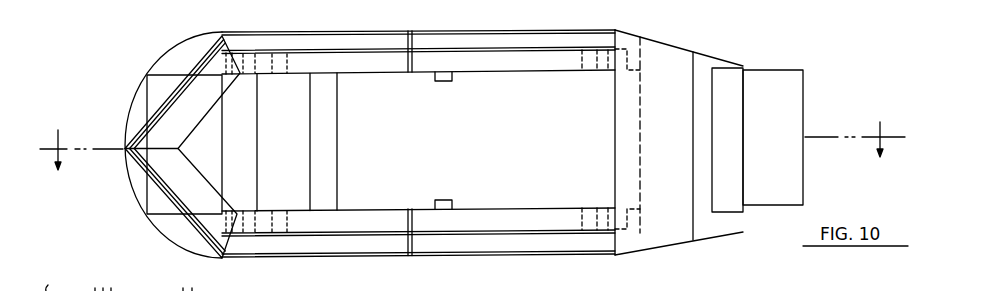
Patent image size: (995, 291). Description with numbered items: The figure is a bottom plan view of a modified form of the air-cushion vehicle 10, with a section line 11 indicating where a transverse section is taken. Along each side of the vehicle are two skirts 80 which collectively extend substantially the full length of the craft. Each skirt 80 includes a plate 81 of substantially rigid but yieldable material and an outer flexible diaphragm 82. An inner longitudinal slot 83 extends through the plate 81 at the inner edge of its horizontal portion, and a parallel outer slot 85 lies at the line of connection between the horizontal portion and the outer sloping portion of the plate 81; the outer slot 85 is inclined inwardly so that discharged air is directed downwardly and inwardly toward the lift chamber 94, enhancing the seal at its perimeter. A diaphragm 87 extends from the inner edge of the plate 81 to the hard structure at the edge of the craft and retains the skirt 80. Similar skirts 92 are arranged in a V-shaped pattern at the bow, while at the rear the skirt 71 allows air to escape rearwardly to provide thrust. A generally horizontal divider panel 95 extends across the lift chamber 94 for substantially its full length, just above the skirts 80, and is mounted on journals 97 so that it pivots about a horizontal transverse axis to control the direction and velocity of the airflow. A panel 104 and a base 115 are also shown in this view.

The apparatus 10 is at (136, 44).
The section line 11- 11 is at (50, 193).
The skirt 71 is at (622, 123).
The skirt 80 is at (373, 86).
The plate 81 is at (278, 36).
The outer flexible diaphragm 82 is at (386, 31).
The inner longitudinal slot 83 is at (333, 50).
The outer slot 85 is at (320, 40).
The diaphragm 87 is at (307, 68).
The skirt 92 is at (203, 97).
The lift chamber 94 is at (513, 204).
The divider panel 95 is at (340, 144).
The journal 97 is at (437, 78).
The panel 104 is at (325, 147).
The base 115 is at (113, 275).